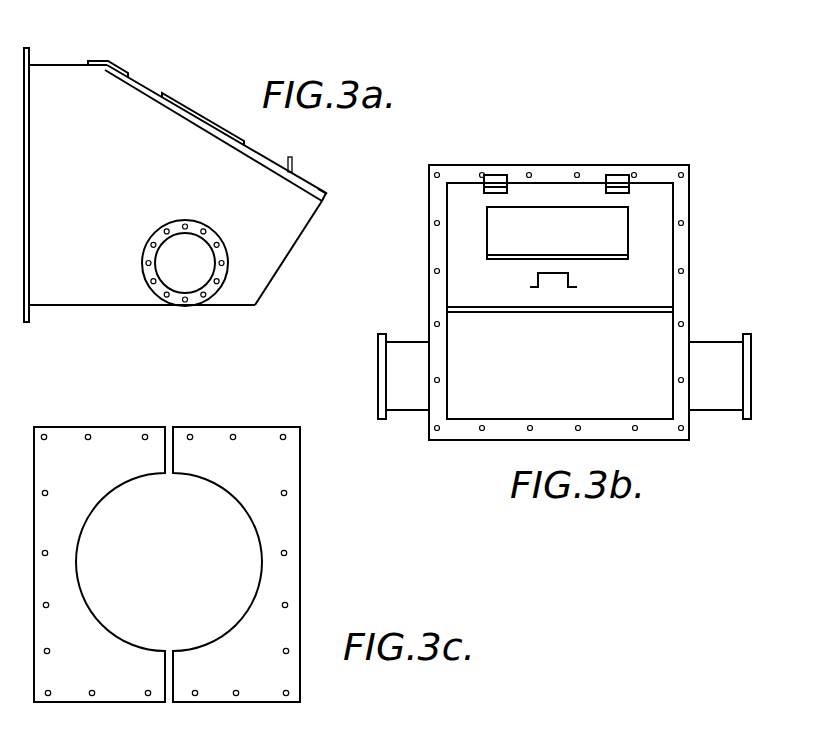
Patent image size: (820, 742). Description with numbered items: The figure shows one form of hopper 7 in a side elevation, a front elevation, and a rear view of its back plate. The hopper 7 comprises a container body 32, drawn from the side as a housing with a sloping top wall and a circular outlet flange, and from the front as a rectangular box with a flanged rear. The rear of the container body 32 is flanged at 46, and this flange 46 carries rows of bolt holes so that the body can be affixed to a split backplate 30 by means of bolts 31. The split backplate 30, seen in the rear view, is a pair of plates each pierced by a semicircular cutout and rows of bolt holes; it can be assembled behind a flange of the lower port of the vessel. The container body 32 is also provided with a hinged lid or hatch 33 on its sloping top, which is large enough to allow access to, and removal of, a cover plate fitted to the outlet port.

In FIG. 3a, the hopper 7 is at (169, 86).
In FIG. 3b, the hopper 7 is at (420, 296).
In FIG. 3c, the hopper 7 is at (314, 603).
In FIG. 3c, the split backplate 30 is at (300, 469).
In FIG. 3b, the bolts 31 is at (633, 430).
In FIG. 3a, the container body 32 is at (268, 248).
In FIG. 3b, the container body 32 is at (572, 390).
In FIG. 3a, the hinged lid or hatch 33 is at (263, 155).
In FIG. 3b, the hinged lid or hatch 33 is at (636, 299).
In FIG. 3b, the flange 46 is at (692, 292).